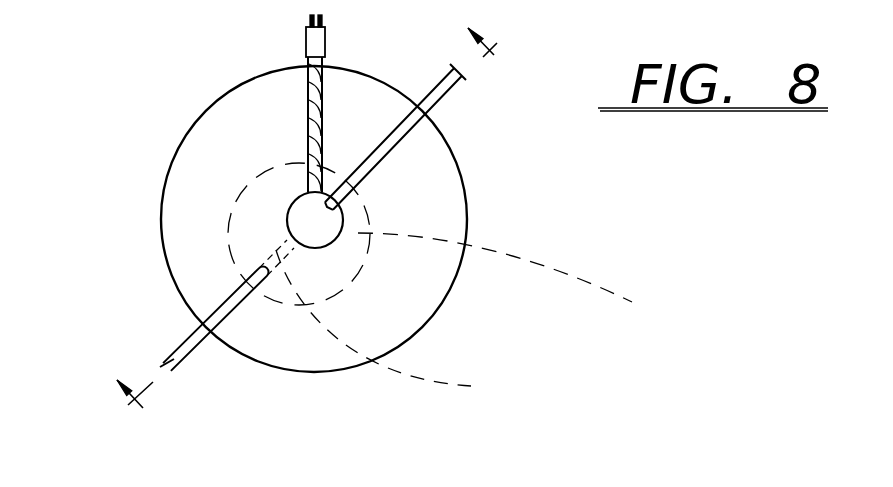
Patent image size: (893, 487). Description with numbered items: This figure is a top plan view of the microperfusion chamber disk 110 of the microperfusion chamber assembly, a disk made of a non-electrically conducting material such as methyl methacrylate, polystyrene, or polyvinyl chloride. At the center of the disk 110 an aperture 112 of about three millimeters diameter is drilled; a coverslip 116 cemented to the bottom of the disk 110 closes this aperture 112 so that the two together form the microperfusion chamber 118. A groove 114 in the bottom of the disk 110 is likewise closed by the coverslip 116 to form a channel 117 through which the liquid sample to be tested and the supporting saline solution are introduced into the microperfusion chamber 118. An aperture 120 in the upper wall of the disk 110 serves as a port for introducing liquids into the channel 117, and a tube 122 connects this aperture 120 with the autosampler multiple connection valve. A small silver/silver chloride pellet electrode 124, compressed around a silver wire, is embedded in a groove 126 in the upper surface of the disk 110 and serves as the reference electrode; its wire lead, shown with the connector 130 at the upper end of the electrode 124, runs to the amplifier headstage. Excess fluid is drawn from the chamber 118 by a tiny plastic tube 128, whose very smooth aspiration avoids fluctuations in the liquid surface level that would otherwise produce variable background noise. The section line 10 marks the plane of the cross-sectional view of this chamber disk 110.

The section line 10 is at (330, 239).
The microperfusion chamber disk 110 is at (271, 355).
The aperture 112 is at (296, 200).
The groove 114 is at (412, 329).
The coverslip 116 is at (533, 285).
The channel 117 is at (289, 246).
The microperfusion chamber 118 is at (330, 232).
The aperture 120 is at (256, 270).
The tube 122 is at (182, 340).
The pellet electrode 124 is at (309, 105).
The groove 126 is at (307, 155).
The plastic tube 128 is at (452, 96).
The connector 130 is at (323, 18).